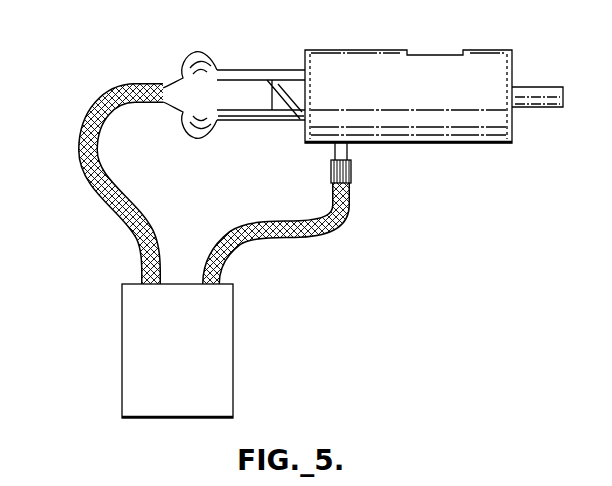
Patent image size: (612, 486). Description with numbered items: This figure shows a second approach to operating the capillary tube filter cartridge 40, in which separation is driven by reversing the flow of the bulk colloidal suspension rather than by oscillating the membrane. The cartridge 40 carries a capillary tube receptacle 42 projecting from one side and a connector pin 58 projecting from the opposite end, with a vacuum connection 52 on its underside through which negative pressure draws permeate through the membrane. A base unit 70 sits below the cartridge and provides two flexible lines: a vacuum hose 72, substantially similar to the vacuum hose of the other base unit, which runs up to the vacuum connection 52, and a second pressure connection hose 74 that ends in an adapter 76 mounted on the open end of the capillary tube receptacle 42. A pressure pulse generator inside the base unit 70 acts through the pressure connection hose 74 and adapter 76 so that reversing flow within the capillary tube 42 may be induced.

The filter cartridge 40 is at (366, 40).
The capillary tube receptacle 42 is at (248, 70).
The vacuum connection 52 is at (348, 152).
The connector pin 58 is at (543, 87).
The base unit 70 is at (223, 378).
The vacuum hose 72 is at (306, 237).
The second pressure connection hose 74 is at (89, 187).
The adapter 76 is at (201, 53).